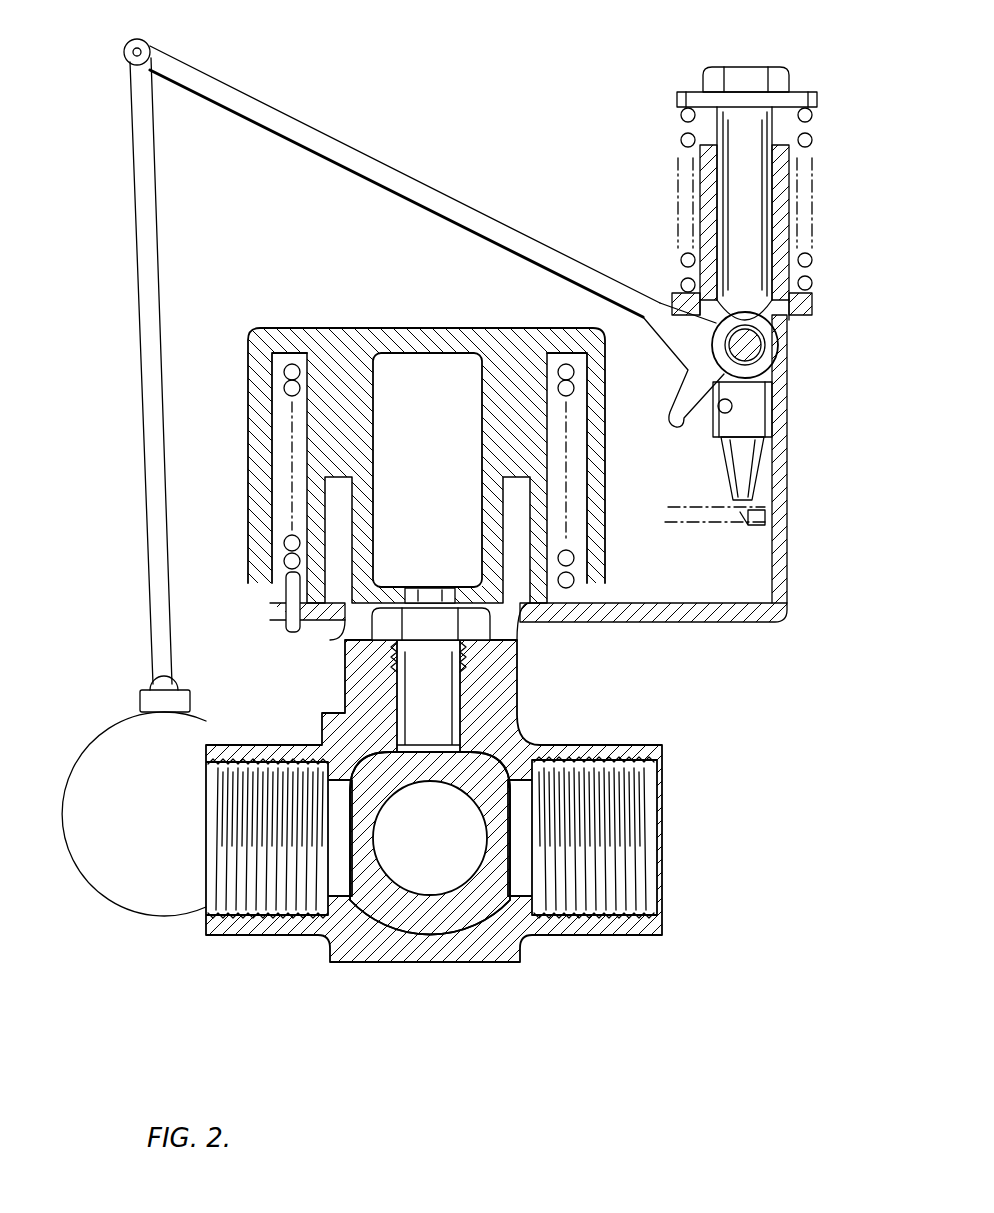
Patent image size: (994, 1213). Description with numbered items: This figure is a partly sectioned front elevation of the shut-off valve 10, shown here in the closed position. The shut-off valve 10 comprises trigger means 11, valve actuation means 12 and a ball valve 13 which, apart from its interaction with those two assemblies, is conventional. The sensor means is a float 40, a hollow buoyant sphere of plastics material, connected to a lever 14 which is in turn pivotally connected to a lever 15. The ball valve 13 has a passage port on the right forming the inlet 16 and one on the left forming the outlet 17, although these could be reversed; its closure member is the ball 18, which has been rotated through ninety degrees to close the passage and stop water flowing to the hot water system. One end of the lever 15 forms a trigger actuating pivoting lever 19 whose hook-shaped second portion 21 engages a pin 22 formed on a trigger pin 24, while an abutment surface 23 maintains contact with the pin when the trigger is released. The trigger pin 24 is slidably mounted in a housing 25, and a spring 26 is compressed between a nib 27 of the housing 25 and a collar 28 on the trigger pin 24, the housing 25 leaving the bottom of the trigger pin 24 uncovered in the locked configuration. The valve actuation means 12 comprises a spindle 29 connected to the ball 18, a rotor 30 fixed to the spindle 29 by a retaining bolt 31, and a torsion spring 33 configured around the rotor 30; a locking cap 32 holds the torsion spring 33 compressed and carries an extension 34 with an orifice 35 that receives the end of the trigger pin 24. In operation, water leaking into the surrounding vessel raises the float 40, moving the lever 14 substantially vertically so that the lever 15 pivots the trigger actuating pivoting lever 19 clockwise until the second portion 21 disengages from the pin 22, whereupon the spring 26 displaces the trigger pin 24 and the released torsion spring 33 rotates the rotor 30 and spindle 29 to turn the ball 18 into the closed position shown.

The shut-off valve 10 is at (498, 312).
The trigger means 11 is at (713, 293).
The valve actuation means 12 is at (244, 384).
The ball valve 13 is at (486, 965).
The lever 14 is at (150, 512).
The lever 15 is at (312, 130).
The inlet 16 is at (620, 852).
The outlet 17 is at (262, 922).
The ball 18 is at (432, 880).
The trigger actuating pivoting lever 19 is at (700, 347).
The second portion 21 is at (672, 420).
The pin 22 is at (752, 433).
The abutment surface 23 is at (733, 405).
The trigger pin 24 is at (758, 440).
The housing 25 is at (712, 190).
The spring 26 is at (812, 140).
The nib 27 is at (790, 306).
The collar 28 is at (690, 92).
The spindle 29 is at (435, 714).
The rotor 30 is at (360, 417).
The retaining bolt 31 is at (426, 596).
The locking cap 32 is at (258, 437).
The torsion spring 33 is at (292, 545).
The extension 34 is at (680, 530).
The orifice 35 is at (738, 530).
The float 40 is at (112, 782).